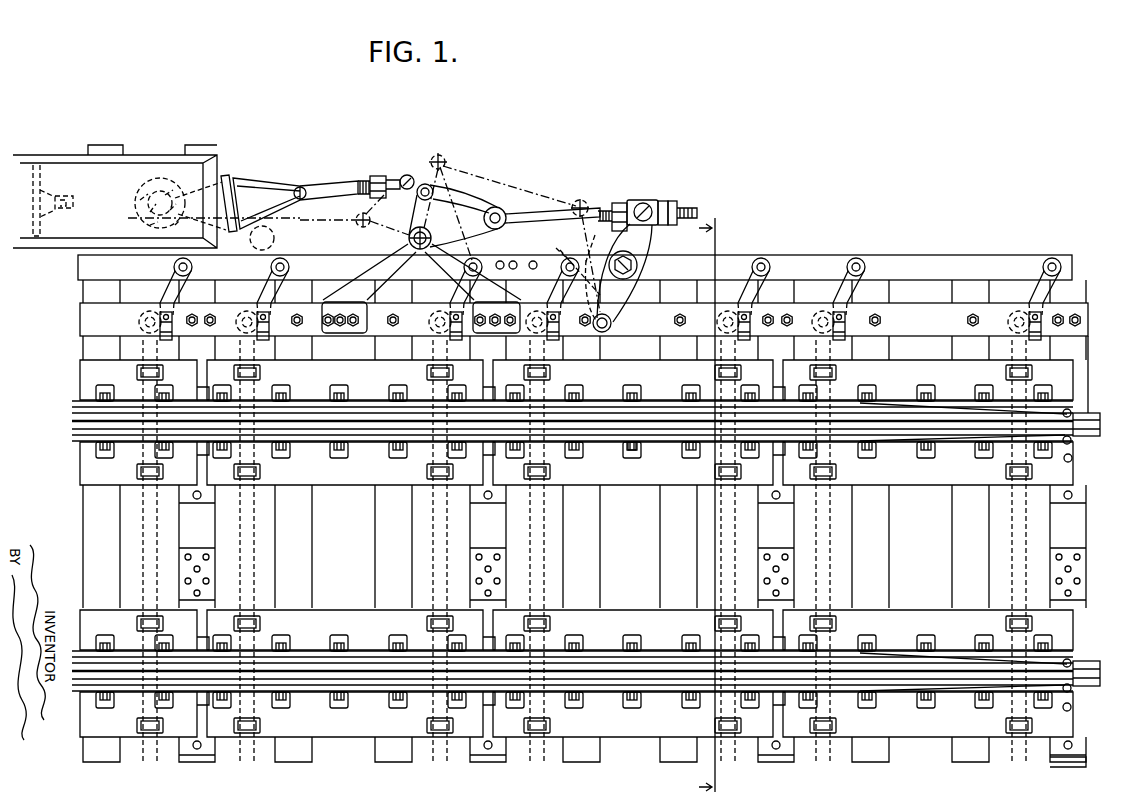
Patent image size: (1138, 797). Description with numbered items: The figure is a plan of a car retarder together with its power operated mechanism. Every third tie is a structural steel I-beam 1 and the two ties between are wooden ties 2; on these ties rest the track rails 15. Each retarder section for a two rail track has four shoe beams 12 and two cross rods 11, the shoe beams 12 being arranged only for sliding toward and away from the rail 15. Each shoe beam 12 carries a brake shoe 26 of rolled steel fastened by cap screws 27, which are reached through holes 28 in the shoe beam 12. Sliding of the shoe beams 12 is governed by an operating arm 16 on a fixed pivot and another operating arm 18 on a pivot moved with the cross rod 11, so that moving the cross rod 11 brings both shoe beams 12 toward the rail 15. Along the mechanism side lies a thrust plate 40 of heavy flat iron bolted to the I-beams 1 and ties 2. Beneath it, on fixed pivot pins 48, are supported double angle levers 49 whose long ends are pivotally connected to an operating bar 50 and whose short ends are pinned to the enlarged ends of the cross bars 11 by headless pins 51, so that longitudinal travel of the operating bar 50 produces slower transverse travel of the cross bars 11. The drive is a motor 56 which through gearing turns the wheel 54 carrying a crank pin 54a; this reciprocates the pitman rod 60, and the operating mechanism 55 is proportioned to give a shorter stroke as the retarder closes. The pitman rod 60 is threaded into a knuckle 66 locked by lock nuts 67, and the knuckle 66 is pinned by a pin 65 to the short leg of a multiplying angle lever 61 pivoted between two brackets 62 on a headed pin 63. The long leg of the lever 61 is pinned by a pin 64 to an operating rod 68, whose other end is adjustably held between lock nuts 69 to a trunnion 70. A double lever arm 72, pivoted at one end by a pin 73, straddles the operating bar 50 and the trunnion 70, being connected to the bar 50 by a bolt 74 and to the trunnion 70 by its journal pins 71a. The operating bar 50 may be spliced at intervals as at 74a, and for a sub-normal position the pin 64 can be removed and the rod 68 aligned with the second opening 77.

The structural steel I-beam 1 is at (206, 757).
The wooden tie 2 is at (99, 775).
The cross rod 11 is at (722, 522).
The shoe beam 12 is at (920, 368).
The track rail 15 is at (1100, 425).
The operating arm 16 is at (722, 373).
The operating arm 18 is at (722, 476).
The brake shoe 26 is at (957, 443).
The cap screw 27 is at (638, 453).
The hole 28 is at (631, 452).
The thrust plate 40 is at (82, 318).
The fixed pivot pin 48 is at (268, 320).
The double angle lever 49 is at (265, 291).
The operating bar 50 is at (944, 258).
The headless pin 51 is at (145, 311).
The wheel 54 is at (158, 178).
The crank pin 54a is at (262, 238).
The operating mechanism 55 is at (130, 162).
The motor 56 is at (24, 172).
The pitman rod 60 is at (340, 187).
The multiplying angle lever 61 is at (496, 206).
The bracket 62 is at (405, 249).
The headed pin 63 is at (501, 228).
The pin 64 is at (500, 208).
The pin 65 is at (408, 175).
The knuckle 66 is at (379, 176).
The lock nut 67 is at (364, 181).
The operating rod 68 is at (580, 203).
The lock nut 69 is at (619, 203).
The trunnion 70 is at (664, 201).
The eye 71a is at (643, 203).
The double lever arm 72 is at (640, 291).
The pin 73 is at (610, 331).
The bolt 74 is at (638, 258).
The splice 74a is at (556, 255).
The second opening 77 is at (454, 221).